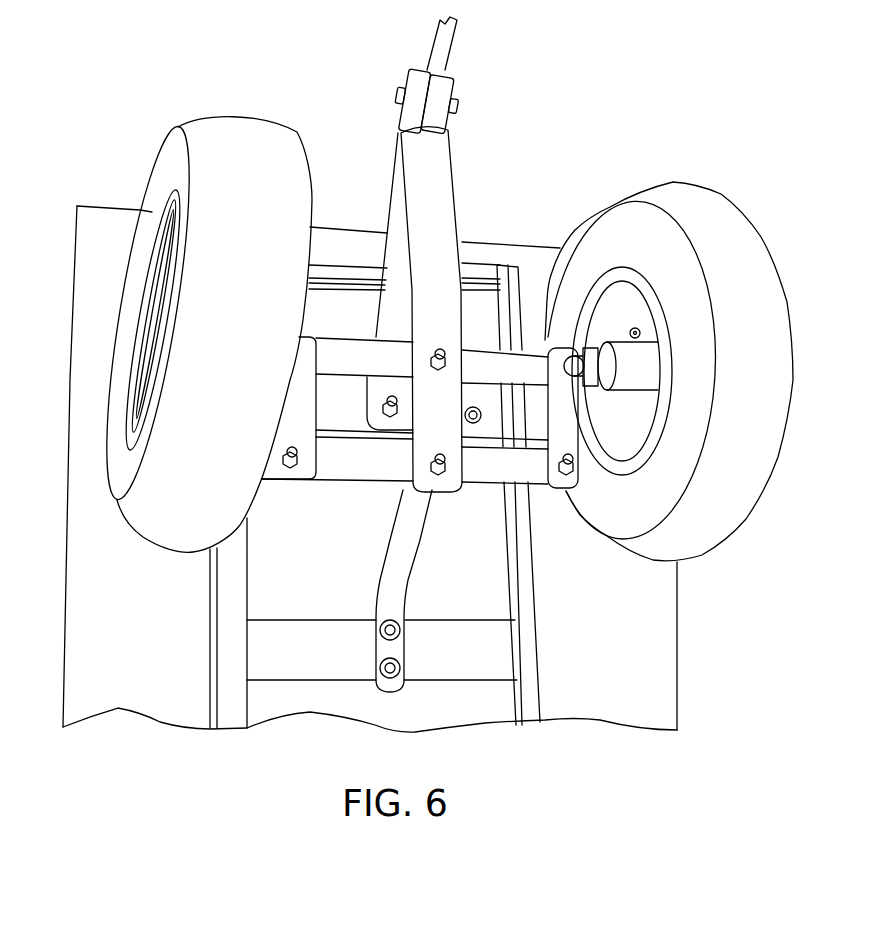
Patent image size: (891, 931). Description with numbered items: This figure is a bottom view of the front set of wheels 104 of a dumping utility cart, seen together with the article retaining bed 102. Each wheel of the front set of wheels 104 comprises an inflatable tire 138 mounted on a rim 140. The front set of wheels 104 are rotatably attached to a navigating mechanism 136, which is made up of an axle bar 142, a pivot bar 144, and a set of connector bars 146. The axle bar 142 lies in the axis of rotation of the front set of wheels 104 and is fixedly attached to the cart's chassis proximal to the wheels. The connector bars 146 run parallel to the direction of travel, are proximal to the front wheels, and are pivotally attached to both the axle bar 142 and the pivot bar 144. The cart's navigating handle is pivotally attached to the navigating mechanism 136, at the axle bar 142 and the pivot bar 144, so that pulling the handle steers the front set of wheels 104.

The article retaining bed 102 is at (660, 688).
The front set of wheels 104 is at (712, 513).
The navigating mechanism 136 is at (441, 493).
The inflatable tires 138 is at (157, 525).
The rims 140 is at (628, 303).
The axle bar 142 is at (522, 358).
The pivot bar 144 is at (520, 467).
The connector bars 146 is at (306, 425).